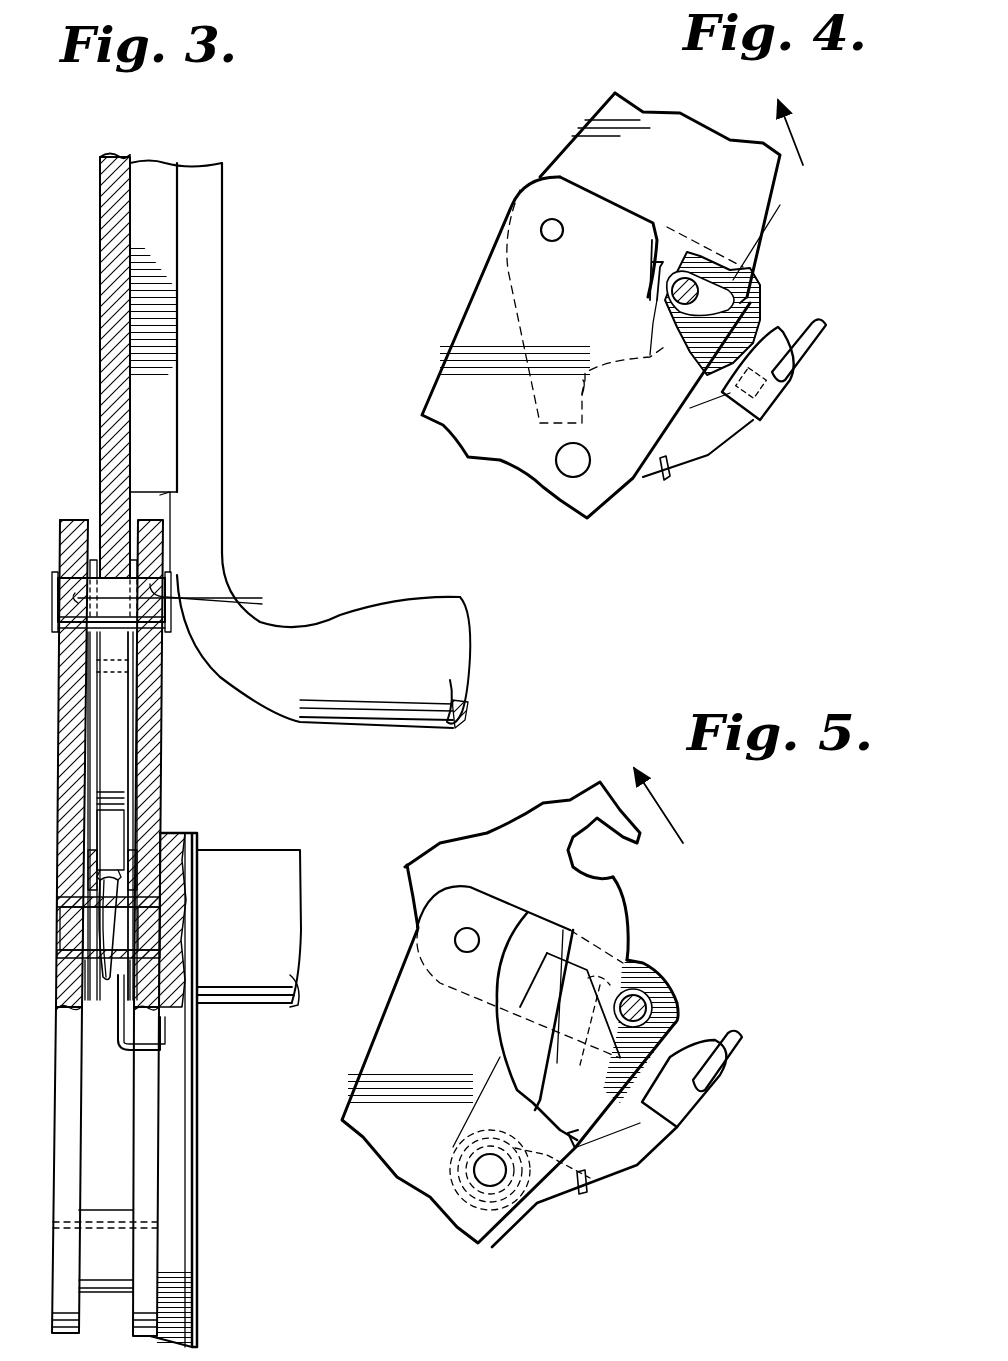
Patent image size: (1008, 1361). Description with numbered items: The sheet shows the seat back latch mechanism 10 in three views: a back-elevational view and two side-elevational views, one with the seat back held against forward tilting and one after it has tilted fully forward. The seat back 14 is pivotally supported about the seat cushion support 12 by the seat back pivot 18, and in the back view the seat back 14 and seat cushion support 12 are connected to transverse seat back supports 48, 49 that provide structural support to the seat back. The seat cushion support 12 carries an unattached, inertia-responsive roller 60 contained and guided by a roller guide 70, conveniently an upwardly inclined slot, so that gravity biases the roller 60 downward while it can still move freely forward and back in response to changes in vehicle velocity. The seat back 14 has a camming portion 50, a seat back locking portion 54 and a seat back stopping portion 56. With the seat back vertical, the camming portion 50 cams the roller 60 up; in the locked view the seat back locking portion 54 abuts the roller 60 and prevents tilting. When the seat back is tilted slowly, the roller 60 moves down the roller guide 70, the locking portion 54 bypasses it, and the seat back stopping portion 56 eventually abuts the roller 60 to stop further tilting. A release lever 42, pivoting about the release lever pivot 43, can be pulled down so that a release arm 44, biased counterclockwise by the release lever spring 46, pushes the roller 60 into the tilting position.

In FIG. 4, the seat back latch mechanism 10 is at (720, 460).
In FIG. 5, the seat back latch mechanism 10 is at (663, 1172).
In FIG. 3, the seat cushion support 12 is at (70, 1150).
In FIG. 4, the seat cushion support 12 is at (493, 317).
In FIG. 5, the seat cushion support 12 is at (393, 1137).
In FIG. 3, the seat back 14 is at (113, 277).
In FIG. 4, the seat back 14 is at (628, 115).
In FIG. 5, the seat back 14 is at (590, 785).
In FIG. 4, the seat back pivot 18 is at (552, 230).
In FIG. 5, the seat back pivot 18 is at (467, 950).
In FIG. 4, the release lever 42 is at (790, 360).
In FIG. 5, the release lever 42 is at (705, 1075).
In FIG. 3, the release lever pivot 43 is at (70, 920).
In FIG. 4, the release lever pivot 43 is at (570, 470).
In FIG. 5, the release lever pivot 43 is at (497, 1180).
In FIG. 3, the release arm 44 is at (90, 738).
In FIG. 4, the release arm 44 is at (652, 262).
In FIG. 5, the release arm 44 is at (560, 970).
In FIG. 3, the release lever spring 46 is at (145, 1045).
In FIG. 4, the release lever spring 46 is at (670, 478).
In FIG. 5, the release lever spring 46 is at (583, 1195).
In FIG. 3, the transverse seat back support 48 is at (418, 617).
In FIG. 3, the transverse seat back support 49 is at (265, 870).
In FIG. 4, the camming portion 50 is at (737, 290).
In FIG. 5, the camming portion 50 is at (550, 812).
In FIG. 3, the seat back locking portion 54 is at (110, 655).
In FIG. 4, the seat back locking portion 54 is at (665, 330).
In FIG. 5, the seat back locking portion 54 is at (610, 893).
In FIG. 3, the seat back stopping portion 56 is at (113, 822).
In FIG. 4, the seat back stopping portion 56 is at (585, 380).
In FIG. 5, the seat back stopping portion 56 is at (660, 1030).
In FIG. 3, the inertia-responsive roller 60 is at (68, 600).
In FIG. 4, the inertia-responsive roller 60 is at (700, 262).
In FIG. 5, the inertia-responsive roller 60 is at (640, 1000).
In FIG. 3, the roller guide 70 is at (181, 598).
In FIG. 4, the roller guide 70 is at (770, 235).
In FIG. 5, the roller guide 70 is at (584, 1034).